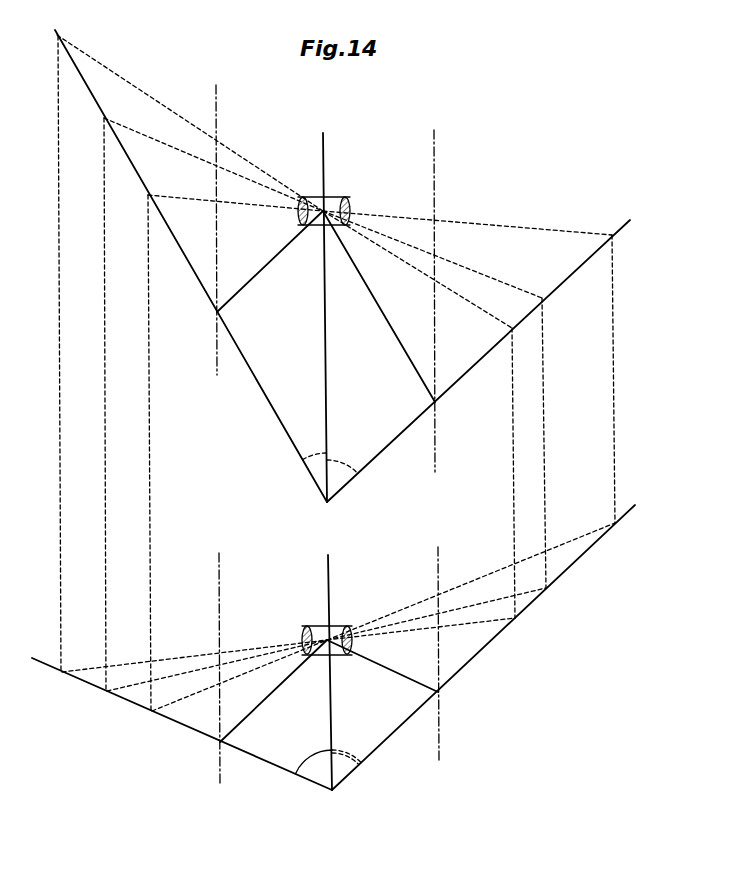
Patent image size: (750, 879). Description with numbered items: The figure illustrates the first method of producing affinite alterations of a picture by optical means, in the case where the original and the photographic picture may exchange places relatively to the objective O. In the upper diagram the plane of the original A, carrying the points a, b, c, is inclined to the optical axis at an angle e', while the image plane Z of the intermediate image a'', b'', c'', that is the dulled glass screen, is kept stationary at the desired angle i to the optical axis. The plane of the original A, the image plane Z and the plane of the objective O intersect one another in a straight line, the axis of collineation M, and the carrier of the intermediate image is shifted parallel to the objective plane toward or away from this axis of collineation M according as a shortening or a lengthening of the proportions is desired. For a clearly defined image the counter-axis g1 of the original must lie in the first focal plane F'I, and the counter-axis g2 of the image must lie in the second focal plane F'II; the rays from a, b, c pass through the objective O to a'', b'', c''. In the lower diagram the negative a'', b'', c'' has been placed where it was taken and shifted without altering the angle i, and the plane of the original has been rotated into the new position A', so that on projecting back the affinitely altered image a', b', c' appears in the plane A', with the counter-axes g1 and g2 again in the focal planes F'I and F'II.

The plane of the original A is at (191, 255).
The point of the original a is at (284, 353).
The point of the original b is at (323, 404).
The point of the original c is at (380, 453).
The first focal plane F'I is at (200, 432).
The second focal plane F'II is at (416, 443).
The objective O is at (325, 461).
The first counter-axis g1 is at (251, 501).
The second counter-axis g2 is at (399, 492).
The image plane Z is at (491, 496).
The axis of collineation M is at (325, 641).
The angle of inclination of the original plane e' is at (313, 444).
The angle of inclination of the image plane i is at (344, 603).
The point of the intermediate image a'' is at (501, 496).
The point of the intermediate image b'' is at (558, 458).
The point of the intermediate image c'' is at (604, 396).
The plane of the original A' is at (182, 710).
The point of the projected image a' is at (279, 664).
The point of the projected image b' is at (316, 655).
The point of the projected image c' is at (376, 632).